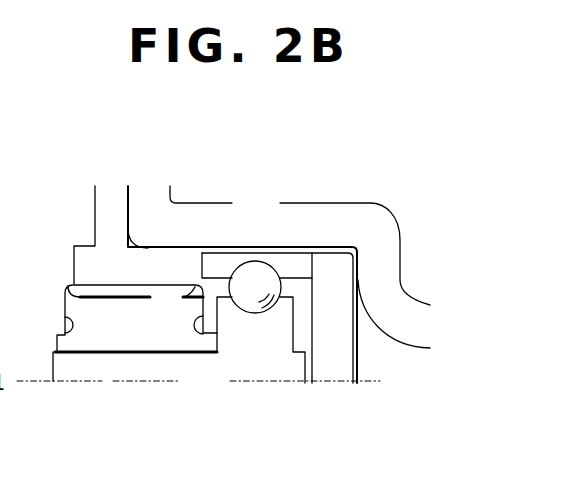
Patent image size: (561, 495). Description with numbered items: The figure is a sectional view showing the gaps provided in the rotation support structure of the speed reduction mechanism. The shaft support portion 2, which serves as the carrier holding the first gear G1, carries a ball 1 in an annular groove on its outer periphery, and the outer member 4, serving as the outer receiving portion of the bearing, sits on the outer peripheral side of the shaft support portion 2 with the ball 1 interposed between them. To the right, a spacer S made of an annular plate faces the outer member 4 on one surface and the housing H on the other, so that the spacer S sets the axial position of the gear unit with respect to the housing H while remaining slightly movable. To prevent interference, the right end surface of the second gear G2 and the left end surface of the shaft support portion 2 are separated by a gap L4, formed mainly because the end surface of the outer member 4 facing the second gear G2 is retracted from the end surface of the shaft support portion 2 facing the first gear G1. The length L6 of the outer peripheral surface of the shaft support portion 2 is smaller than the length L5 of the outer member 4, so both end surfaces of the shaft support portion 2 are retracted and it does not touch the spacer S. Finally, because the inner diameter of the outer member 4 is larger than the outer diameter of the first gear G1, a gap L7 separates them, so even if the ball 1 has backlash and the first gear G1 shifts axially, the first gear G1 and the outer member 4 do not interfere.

The balls 1 is at (228, 278).
The shaft support portion 2 is at (280, 370).
The outer member 4 is at (297, 265).
The housing H is at (365, 224).
The spacer S is at (333, 365).
The first gear G1 is at (112, 337).
The second gear G2 is at (83, 268).
The gap L4 is at (217, 355).
The length of the outer member L5 is at (204, 225).
The length of the outer peripheral surface of the shaft support portion L6 is at (217, 334).
The gap L7 is at (167, 297).